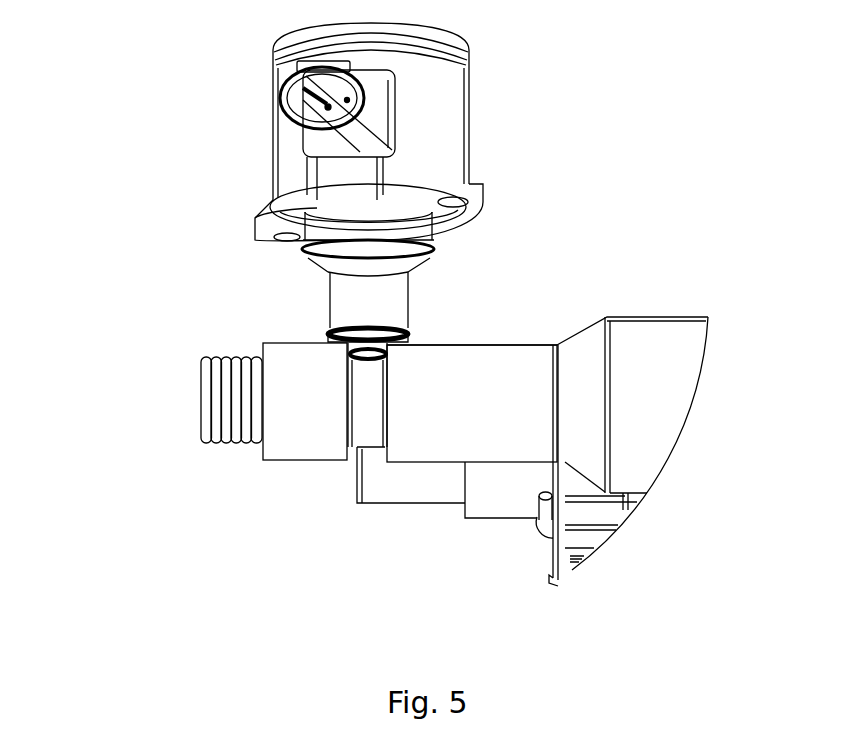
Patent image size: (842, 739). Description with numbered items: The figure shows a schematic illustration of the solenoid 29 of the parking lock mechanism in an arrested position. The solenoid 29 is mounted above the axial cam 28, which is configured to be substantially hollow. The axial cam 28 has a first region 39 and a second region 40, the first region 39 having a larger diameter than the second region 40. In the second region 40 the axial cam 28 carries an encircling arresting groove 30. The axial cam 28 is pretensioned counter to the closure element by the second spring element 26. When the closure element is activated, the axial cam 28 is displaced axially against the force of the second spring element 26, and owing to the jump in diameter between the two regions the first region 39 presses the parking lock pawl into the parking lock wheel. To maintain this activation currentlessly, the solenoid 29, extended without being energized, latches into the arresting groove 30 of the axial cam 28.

The solenoid 29 is at (442, 133).
The second spring element 26 is at (232, 383).
The arresting groove 30 is at (368, 425).
The axial cam 28 is at (507, 385).
The second region 40 is at (452, 345).
The first region 39 is at (670, 317).